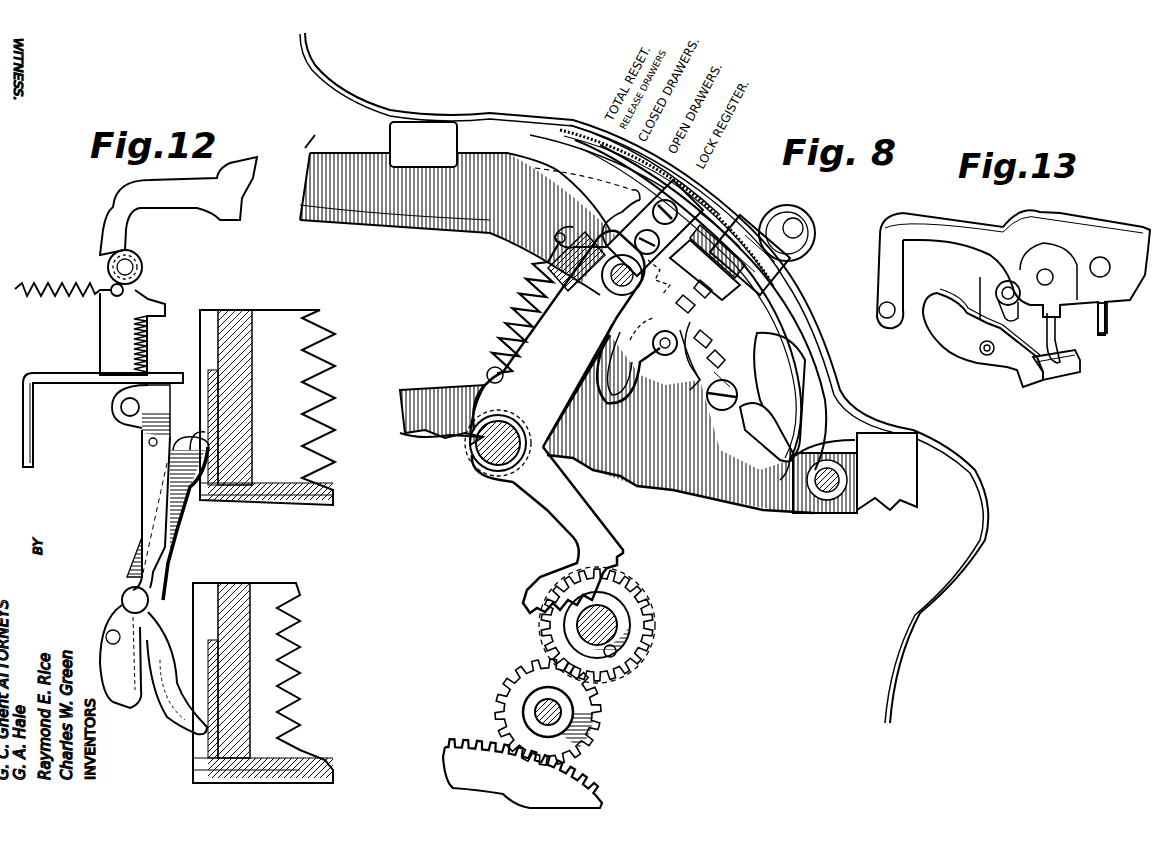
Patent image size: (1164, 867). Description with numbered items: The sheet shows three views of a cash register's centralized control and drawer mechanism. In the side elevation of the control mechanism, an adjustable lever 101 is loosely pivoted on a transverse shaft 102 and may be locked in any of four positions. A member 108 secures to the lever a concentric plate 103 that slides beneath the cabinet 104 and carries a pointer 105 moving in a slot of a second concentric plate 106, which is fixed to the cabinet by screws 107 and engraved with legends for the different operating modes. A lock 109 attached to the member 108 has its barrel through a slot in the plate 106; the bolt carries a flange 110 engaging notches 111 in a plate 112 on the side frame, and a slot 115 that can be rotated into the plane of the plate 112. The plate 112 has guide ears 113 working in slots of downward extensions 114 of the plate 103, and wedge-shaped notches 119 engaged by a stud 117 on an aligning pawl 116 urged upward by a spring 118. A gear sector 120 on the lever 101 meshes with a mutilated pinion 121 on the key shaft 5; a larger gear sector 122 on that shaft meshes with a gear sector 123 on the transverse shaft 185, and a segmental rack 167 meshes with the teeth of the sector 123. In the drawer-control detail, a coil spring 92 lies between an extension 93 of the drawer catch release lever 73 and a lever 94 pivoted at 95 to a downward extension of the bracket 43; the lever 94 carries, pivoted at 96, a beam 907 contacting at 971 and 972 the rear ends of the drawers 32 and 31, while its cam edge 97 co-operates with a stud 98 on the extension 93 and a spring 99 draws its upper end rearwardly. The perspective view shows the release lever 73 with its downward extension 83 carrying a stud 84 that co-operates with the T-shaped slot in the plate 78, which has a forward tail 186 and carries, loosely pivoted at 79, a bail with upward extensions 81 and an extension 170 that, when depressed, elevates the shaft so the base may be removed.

In FIG. 12, the extension 93 is at (124, 231).
In FIG. 13, the extension 93 is at (885, 268).
In FIG. 12, the stud 98 is at (143, 265).
In FIG. 12, the spring 99 is at (57, 283).
In FIG. 12, the cam edge 97 is at (145, 290).
In FIG. 12, the coil spring 92 is at (147, 333).
In FIG. 12, the bracket 43 is at (162, 380).
In FIG. 12, the pivot 95 is at (123, 413).
In FIG. 12, the lever 94 is at (140, 495).
In FIG. 12, the beam 907 is at (180, 520).
In FIG. 12, the pivot 96 is at (123, 600).
In FIG. 12, the contact point 971 is at (170, 690).
In FIG. 12, the contact point 972 is at (205, 455).
In FIG. 12, the drawer 31 is at (252, 400).
In FIG. 12, the drawer 32 is at (250, 605).
In FIG. 8, the screws 107 is at (560, 107).
In FIG. 8, the guide ears 113 is at (692, 320).
In FIG. 8, the member 108 is at (648, 222).
In FIG. 8, the concentric plate 106 is at (695, 185).
In FIG. 8, the pointer 105 is at (630, 160).
In FIG. 8, the concentric plate 103 is at (720, 190).
In FIG. 8, the cabinet 104 is at (825, 370).
In FIG. 8, the lock 109 is at (780, 275).
In FIG. 8, the flange 110 is at (715, 305).
In FIG. 8, the notches 111 is at (705, 349).
In FIG. 8, the plate 112 is at (718, 383).
In FIG. 8, the slot 115 is at (666, 281).
In FIG. 8, the adjustable lever 101 is at (574, 337).
In FIG. 8, the transverse shaft 102 is at (490, 447).
In FIG. 8, the stud 117 is at (626, 307).
In FIG. 8, the aligning pawl 116 is at (655, 340).
In FIG. 8, the wedge shaped notches 119 is at (688, 375).
In FIG. 8, the spring 118 is at (520, 318).
In FIG. 8, the gear sector 120 is at (584, 565).
In FIG. 8, the mutilated pinion 121 is at (610, 615).
In FIG. 8, the gear sector 122 is at (650, 615).
In FIG. 8, the key shaft 5 is at (615, 630).
In FIG. 8, the gear sector 123 is at (595, 700).
In FIG. 8, the transverse shaft 185 is at (580, 740).
In FIG. 8, the segmental rack 167 is at (522, 773).
In FIG. 8, the downward extensions 114 is at (800, 460).
In FIG. 13, the drawer catch release lever 73 is at (1150, 228).
In FIG. 13, the stud 84 is at (997, 290).
In FIG. 13, the downward extension 83 is at (1003, 280).
In FIG. 13, the upward extensions 81 is at (935, 320).
In FIG. 13, the pivot 79 is at (983, 353).
In FIG. 13, the plate 78 is at (1045, 345).
In FIG. 13, the extension 170 is at (1055, 380).
In FIG. 13, the tail 186 is at (1107, 315).